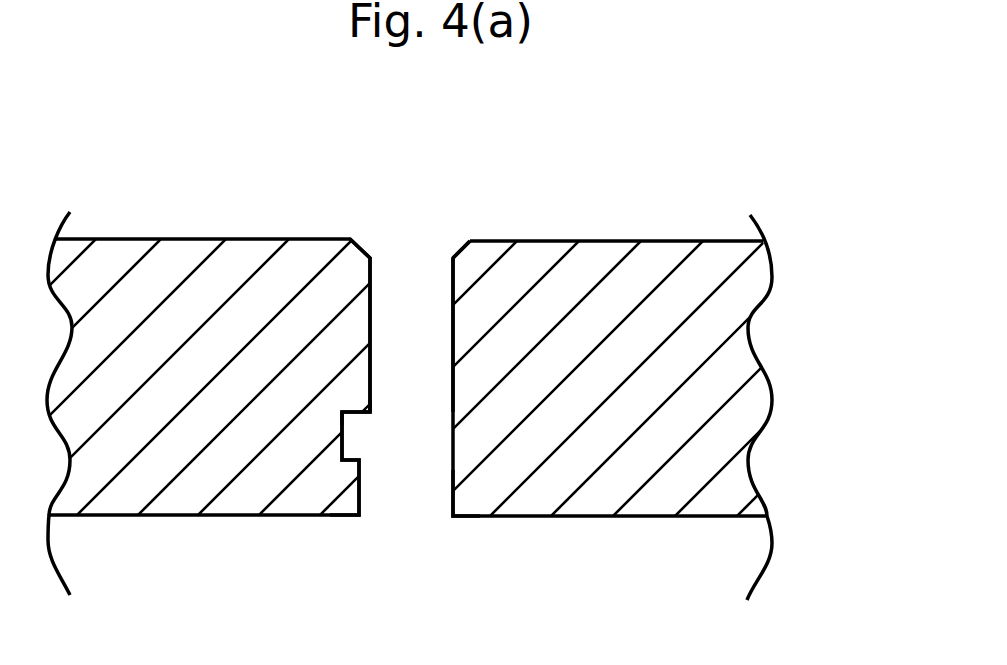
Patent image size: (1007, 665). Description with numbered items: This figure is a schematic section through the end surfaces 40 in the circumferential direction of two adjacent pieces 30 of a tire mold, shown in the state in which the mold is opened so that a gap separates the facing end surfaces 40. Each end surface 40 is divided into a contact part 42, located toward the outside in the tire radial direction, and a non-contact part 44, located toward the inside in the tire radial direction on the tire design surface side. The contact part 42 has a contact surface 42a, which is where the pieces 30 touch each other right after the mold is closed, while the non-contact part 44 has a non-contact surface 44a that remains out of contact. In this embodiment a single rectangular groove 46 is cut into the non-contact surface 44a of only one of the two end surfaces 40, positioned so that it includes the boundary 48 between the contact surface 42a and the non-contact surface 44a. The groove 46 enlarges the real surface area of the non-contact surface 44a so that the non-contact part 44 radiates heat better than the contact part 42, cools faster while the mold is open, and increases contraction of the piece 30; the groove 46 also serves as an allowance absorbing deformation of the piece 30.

The piece 30 is at (167, 492).
The end surface 40 is at (430, 376).
The contact part 42 is at (350, 240).
The contact surface 42a is at (452, 304).
The non-contact part 44 is at (345, 500).
The non-contact surface 44a is at (452, 473).
The groove 46 is at (353, 435).
The boundary 48 is at (372, 412).